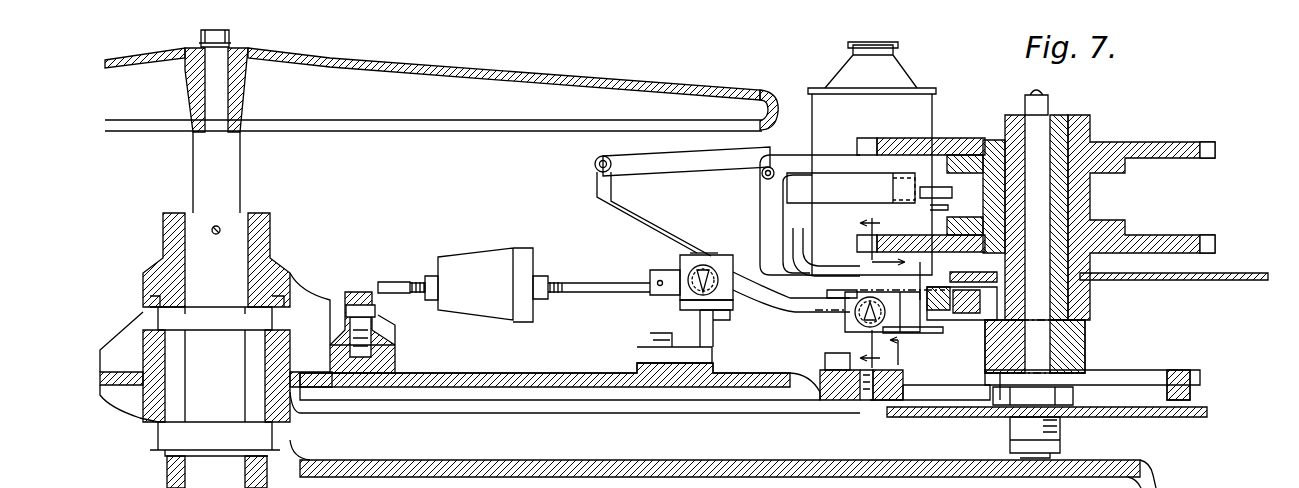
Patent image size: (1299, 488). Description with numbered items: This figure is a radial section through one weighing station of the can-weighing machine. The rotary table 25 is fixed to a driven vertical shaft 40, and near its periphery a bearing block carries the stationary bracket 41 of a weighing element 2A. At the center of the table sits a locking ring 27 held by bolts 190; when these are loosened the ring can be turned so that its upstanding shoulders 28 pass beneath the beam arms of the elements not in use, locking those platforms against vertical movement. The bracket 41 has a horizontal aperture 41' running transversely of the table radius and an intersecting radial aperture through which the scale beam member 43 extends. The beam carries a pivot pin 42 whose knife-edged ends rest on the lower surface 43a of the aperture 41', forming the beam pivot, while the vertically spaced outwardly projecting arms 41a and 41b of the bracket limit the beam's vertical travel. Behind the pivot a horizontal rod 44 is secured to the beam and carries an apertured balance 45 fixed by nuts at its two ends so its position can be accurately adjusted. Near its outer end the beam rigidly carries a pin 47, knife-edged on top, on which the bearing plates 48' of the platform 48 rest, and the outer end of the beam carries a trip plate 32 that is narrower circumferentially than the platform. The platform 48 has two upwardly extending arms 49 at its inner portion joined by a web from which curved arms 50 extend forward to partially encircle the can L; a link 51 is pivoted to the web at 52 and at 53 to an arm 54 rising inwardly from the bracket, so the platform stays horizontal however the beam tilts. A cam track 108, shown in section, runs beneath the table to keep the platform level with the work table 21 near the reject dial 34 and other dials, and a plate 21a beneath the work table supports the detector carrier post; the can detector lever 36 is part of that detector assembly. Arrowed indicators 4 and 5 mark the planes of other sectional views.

The vertical shaft 40 is at (245, 246).
The rotary table 25 is at (543, 366).
The shoulders 28 is at (363, 287).
The bolts 190 is at (388, 330).
The locking ring 27 is at (398, 346).
The rod 44 is at (580, 283).
The apertured balance 45 is at (522, 255).
The horizontal aperture 41' is at (650, 277).
The pivot pin 42 is at (690, 270).
The lower surface 43a is at (690, 303).
The outwardly projecting arm 41b is at (733, 325).
The stationary bracket 41 is at (662, 343).
The scale beam member 43 is at (792, 320).
The weighing element 2A is at (870, 195).
The can detector lever 36 is at (962, 188).
The pin 47 is at (835, 337).
The trip plate 32 is at (920, 332).
The bearing plates 48' is at (962, 286).
The section line 5 is at (897, 309).
The section line 4 is at (875, 292).
The platform 48 is at (791, 247).
The upwardly extending arms 49 is at (775, 230).
The curved arms 50 is at (800, 185).
The pivot 52 is at (764, 178).
The link 51 is at (678, 165).
The pivot 53 is at (595, 164).
The arm 54 is at (615, 207).
The outwardly projecting arm 41a is at (698, 221).
The can L is at (935, 104).
The cam track 108 is at (985, 325).
The reject dial 34 is at (1160, 130).
The work table 21 is at (1175, 280).
The plate 21a is at (1206, 451).